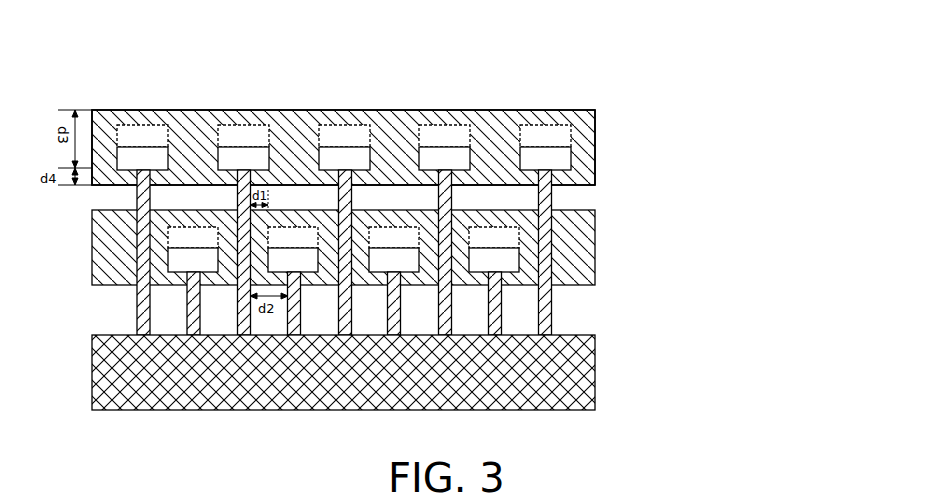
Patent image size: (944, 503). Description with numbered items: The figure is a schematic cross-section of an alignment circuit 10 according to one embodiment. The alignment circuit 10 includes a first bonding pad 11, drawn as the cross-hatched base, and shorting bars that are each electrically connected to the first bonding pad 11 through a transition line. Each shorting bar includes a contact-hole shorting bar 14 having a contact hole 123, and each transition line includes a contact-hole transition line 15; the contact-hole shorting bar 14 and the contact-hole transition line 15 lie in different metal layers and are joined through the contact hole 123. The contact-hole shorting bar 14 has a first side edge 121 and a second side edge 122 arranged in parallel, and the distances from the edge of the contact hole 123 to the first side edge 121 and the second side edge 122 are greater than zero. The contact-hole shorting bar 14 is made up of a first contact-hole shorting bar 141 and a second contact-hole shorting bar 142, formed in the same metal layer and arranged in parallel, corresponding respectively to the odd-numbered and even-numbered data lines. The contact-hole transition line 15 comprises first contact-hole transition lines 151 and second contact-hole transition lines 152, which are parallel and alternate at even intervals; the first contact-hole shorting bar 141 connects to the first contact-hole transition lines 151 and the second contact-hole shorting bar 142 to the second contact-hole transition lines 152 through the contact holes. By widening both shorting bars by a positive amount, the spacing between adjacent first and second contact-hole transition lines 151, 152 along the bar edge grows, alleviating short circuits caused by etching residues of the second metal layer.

The alignment circuit 10 is at (790, 128).
The first bonding pad 11 is at (565, 380).
The contact-hole shorting bar 14 is at (718, 128).
The first contact-hole shorting bar 141 is at (595, 118).
The second contact-hole shorting bar 142 is at (595, 218).
The first side edge 121 is at (193, 110).
The second side edge 122 is at (408, 185).
The contact hole 123 is at (552, 159).
The contact-hole transition line 15 is at (675, 278).
The first contact-hole transition line 151 is at (549, 282).
The second contact-hole transition line 152 is at (494, 322).